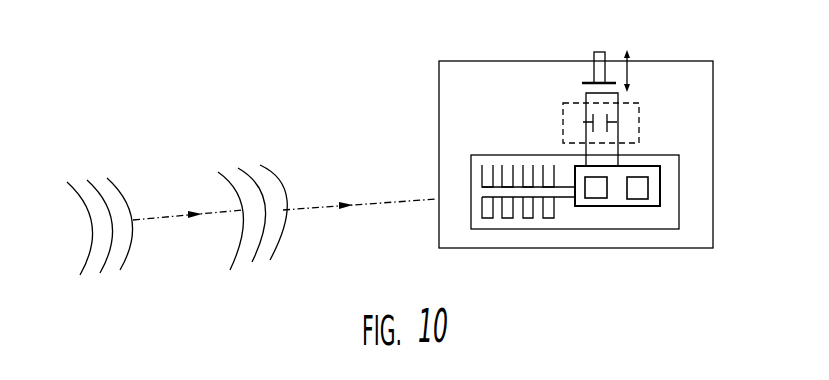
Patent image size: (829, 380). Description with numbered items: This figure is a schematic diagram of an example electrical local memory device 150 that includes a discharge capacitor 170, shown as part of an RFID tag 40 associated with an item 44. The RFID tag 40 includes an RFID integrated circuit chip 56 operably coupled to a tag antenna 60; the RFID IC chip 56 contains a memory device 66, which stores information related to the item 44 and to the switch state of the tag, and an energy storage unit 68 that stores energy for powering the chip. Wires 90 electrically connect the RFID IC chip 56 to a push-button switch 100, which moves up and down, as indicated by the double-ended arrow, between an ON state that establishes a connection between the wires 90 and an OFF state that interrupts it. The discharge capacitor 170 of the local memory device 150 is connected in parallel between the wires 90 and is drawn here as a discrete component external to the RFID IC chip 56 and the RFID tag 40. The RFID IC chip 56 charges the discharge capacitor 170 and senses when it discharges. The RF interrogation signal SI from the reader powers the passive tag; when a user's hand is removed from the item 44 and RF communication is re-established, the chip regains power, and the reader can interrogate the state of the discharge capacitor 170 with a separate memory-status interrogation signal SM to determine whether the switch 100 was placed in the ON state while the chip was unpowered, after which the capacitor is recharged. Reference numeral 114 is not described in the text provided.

The memory-status interrogation signal SM is at (125, 280).
The RF interrogation signal SI is at (280, 272).
The optical signal path 114 is at (407, 201).
The item 44 is at (692, 61).
The RFID tag 40 is at (615, 229).
The tag antenna 60 is at (505, 212).
The RFID integrated circuit chip 56 is at (578, 206).
The memory device 66 is at (600, 190).
The energy storage unit 68 is at (643, 192).
The wires 90 is at (586, 105).
The switch 100 is at (580, 68).
The local memory device 150 is at (640, 120).
The discharge capacitor 170 is at (583, 122).